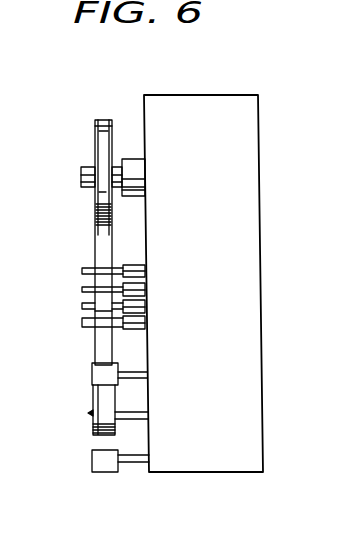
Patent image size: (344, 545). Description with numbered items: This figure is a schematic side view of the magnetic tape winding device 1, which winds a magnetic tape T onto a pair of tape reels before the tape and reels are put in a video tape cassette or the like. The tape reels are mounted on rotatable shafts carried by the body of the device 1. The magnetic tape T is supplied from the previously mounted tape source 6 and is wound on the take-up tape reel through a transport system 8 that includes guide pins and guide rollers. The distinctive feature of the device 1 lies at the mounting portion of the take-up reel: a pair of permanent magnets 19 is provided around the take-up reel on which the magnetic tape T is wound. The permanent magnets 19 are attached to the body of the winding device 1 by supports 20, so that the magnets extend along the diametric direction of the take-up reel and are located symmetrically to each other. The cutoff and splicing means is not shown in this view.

The magnetic tape winding device 1 is at (259, 175).
The magnetic tape source 6 is at (95, 122).
The magnetic tape T is at (95, 216).
The transport system 8 is at (78, 290).
The permanent magnets 19 is at (92, 373).
The supports 20 is at (143, 378).